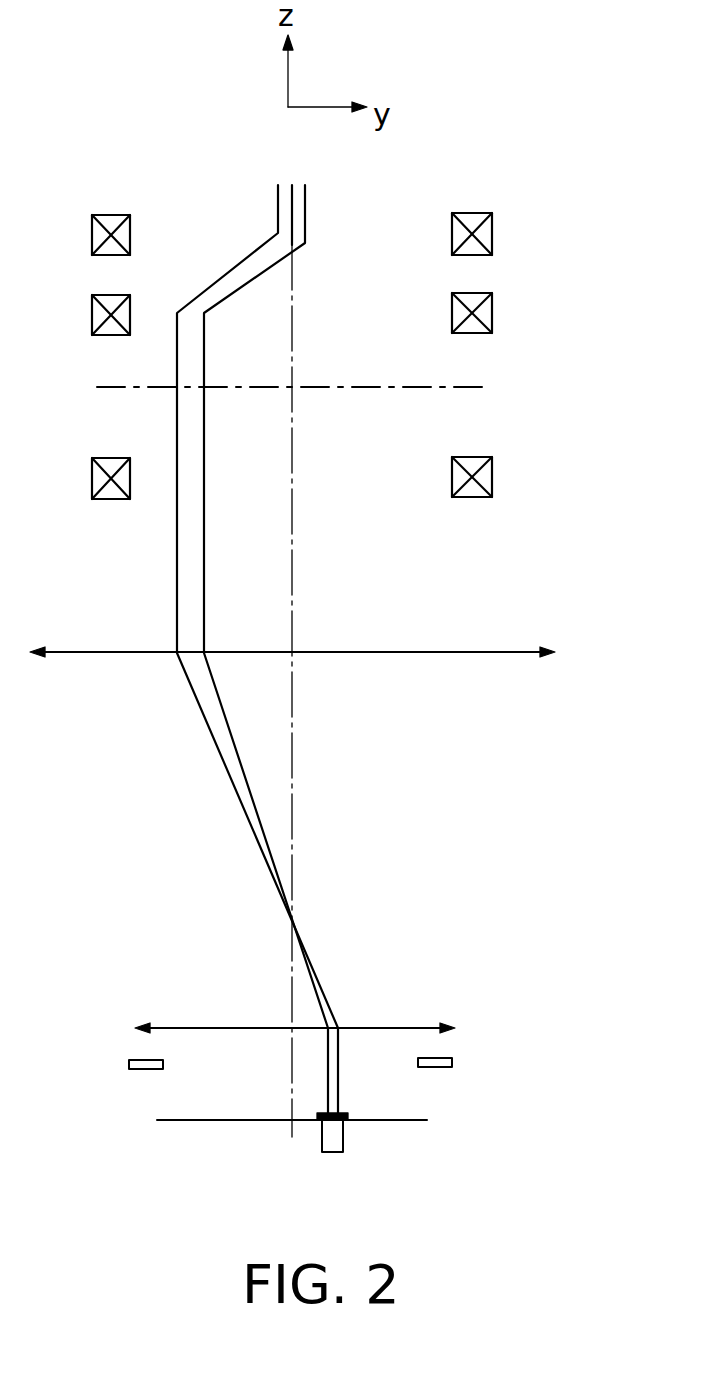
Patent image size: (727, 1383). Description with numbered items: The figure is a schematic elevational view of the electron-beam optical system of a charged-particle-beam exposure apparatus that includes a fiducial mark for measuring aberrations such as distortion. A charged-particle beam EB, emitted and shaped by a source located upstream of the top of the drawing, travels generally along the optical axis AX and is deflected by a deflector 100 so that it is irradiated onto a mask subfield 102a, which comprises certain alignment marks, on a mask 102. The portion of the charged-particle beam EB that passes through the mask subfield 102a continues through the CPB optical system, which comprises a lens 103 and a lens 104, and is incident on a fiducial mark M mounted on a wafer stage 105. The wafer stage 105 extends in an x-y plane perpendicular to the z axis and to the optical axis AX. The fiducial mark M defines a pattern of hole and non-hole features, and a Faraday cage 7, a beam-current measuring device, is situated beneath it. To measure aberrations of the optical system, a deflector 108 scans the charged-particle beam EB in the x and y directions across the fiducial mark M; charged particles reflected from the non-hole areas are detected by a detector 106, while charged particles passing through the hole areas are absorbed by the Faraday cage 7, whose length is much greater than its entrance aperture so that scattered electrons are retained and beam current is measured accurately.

The charged-particle beam EB is at (306, 210).
The optical axis AX is at (292, 562).
The deflector 100 is at (507, 213).
The deflector 108 is at (492, 478).
The mask 102 is at (430, 390).
The mask subfield 102a is at (191, 375).
The lens 103 is at (470, 652).
The lens 104 is at (415, 1028).
The detector 106 is at (435, 1057).
The fiducial mark M is at (345, 1112).
The wafer stage 105 is at (400, 1122).
The Faraday cage 7 is at (333, 1153).